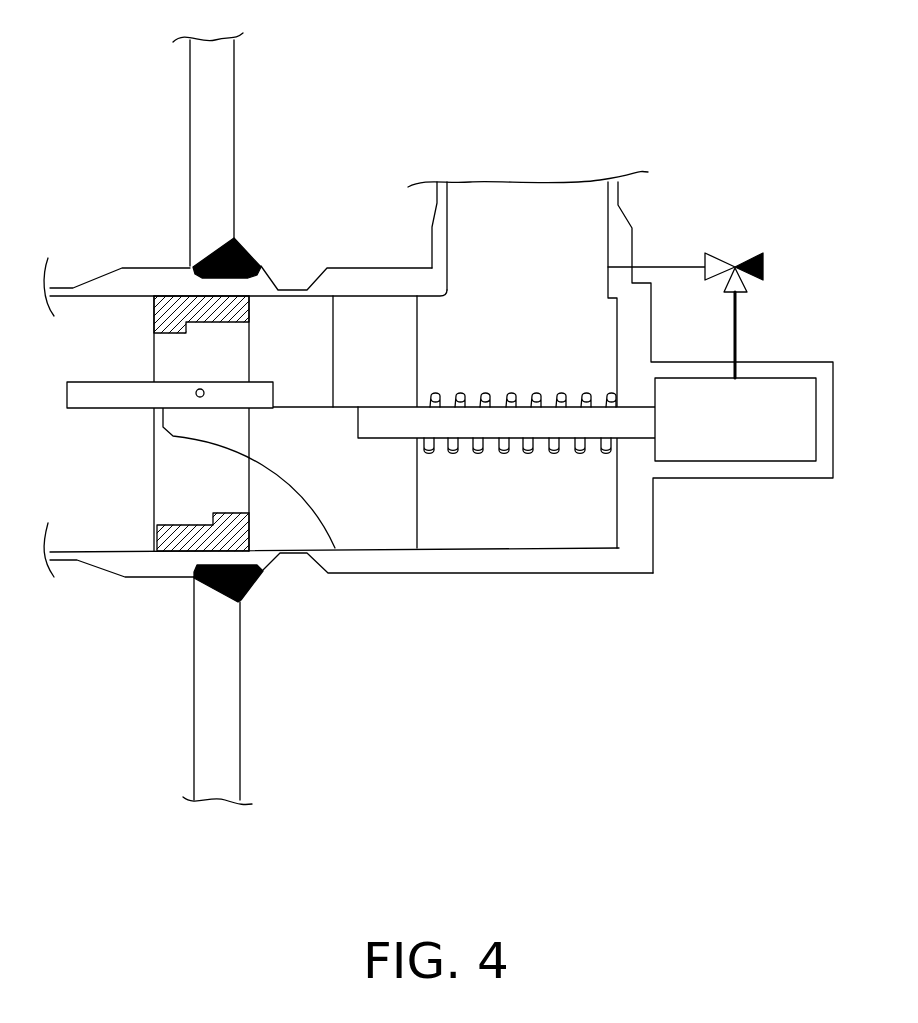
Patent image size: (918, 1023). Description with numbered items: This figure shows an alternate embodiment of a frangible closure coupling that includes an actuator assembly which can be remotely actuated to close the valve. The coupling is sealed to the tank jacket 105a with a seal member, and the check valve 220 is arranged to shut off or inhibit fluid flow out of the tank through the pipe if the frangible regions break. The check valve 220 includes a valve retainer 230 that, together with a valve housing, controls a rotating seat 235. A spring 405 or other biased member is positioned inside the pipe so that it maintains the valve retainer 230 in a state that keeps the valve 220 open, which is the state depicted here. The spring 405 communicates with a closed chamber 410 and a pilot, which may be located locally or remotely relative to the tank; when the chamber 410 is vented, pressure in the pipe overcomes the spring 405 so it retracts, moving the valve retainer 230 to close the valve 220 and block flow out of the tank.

The tank jacket 105a is at (215, 108).
The check valve 220 is at (110, 448).
The valve retainer 230 is at (380, 528).
The rotating seat 235 is at (128, 390).
The spring 405 is at (542, 420).
The closed chamber 410 is at (775, 383).